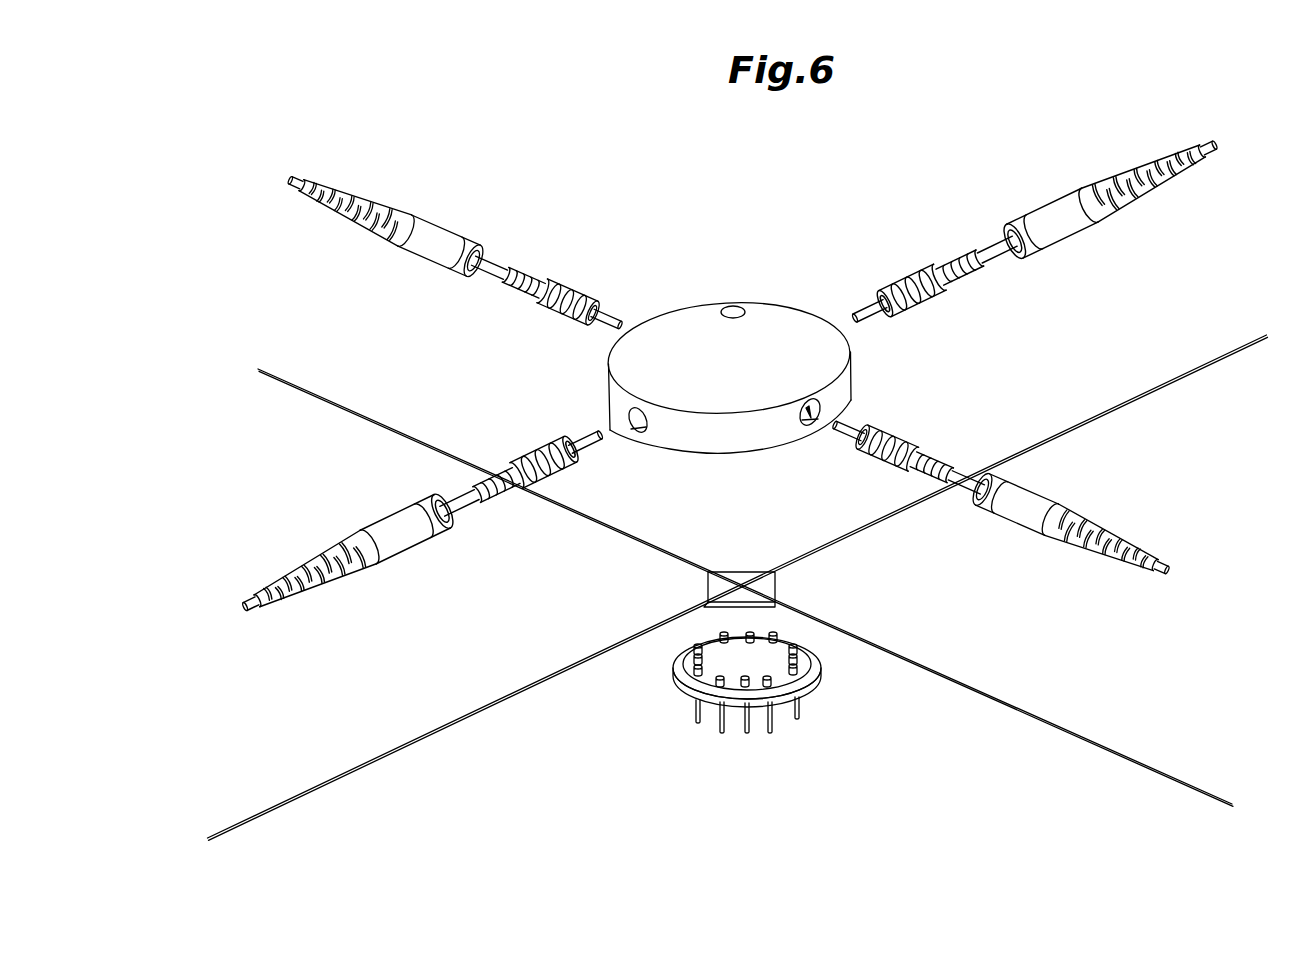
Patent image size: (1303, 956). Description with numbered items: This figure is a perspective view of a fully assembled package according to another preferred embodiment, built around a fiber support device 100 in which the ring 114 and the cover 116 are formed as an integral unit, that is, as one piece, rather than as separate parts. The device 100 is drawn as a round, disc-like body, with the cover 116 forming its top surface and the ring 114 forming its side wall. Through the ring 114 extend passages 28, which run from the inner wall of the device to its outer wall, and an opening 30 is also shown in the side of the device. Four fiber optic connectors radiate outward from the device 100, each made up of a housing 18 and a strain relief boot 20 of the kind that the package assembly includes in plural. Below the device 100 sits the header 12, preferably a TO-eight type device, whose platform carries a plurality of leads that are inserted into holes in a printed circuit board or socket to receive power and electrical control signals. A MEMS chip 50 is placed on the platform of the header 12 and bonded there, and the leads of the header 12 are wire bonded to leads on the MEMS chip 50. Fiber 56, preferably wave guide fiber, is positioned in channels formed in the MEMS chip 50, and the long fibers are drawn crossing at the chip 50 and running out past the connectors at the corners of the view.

The header 12 is at (822, 674).
The housing 18 is at (905, 450).
The strain relief boot 20 is at (1052, 498).
The passage 28 is at (815, 425).
The opening 30 is at (636, 452).
The MEMS chip 50 is at (778, 577).
The fiber 56 is at (833, 541).
The fiber support device 100 is at (722, 238).
The ring 114 is at (860, 372).
The cover 116 is at (772, 333).